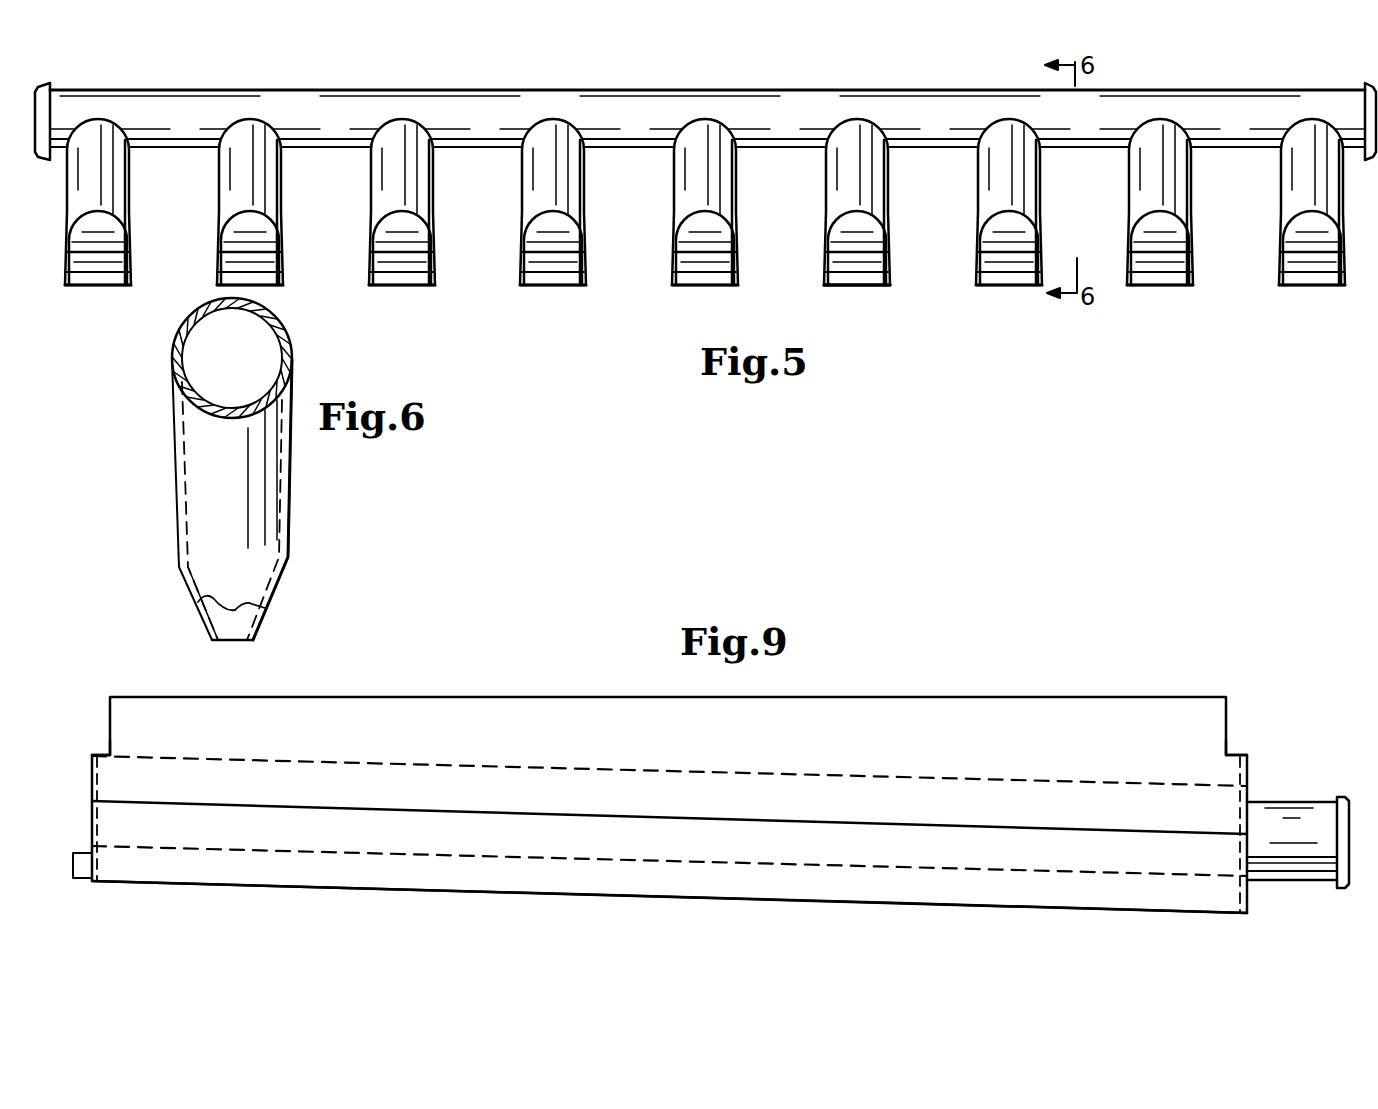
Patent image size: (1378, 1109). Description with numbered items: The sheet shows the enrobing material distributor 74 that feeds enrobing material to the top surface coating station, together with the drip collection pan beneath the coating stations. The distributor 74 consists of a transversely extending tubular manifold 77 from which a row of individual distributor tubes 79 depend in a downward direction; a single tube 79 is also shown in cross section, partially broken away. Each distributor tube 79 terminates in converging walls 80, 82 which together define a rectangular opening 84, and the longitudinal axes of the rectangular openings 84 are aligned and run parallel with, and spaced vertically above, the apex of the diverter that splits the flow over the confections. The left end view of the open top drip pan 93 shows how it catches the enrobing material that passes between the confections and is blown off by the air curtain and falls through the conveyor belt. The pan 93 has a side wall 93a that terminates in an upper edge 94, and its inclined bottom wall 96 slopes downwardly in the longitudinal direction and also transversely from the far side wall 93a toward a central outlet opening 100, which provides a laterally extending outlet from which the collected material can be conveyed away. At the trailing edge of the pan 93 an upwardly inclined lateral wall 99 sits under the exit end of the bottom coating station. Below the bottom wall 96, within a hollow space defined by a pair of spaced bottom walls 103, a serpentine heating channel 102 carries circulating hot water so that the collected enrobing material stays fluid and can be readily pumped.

In FIG. 5, the enrobing material distributor 74 is at (865, 88).
In FIG. 5, the tubular manifold 77 is at (934, 140).
In FIG. 6, the tubular manifold 77 is at (288, 337).
In FIG. 5, the distributor tubes 79 is at (831, 222).
In FIG. 6, the distributor tubes 79 is at (293, 484).
In FIG. 5, the converging wall 80 is at (886, 268).
In FIG. 6, the converging wall 80 is at (198, 610).
In FIG. 6, the converging wall 82 is at (263, 608).
In FIG. 5, the rectangular openings 84 is at (856, 288).
In FIG. 6, the rectangular openings 84 is at (235, 644).
In FIG. 9, the drip pan 93 is at (1250, 793).
In FIG. 9, the side wall 93a is at (89, 787).
In FIG. 9, the upper edge 94 is at (103, 755).
In FIG. 9, the inclined bottom wall 96 is at (665, 771).
In FIG. 9, the upwardly inclined lateral wall 99 is at (505, 738).
In FIG. 9, the central outlet opening 100 is at (1312, 813).
In FIG. 9, the heating channel 102 is at (977, 899).
In FIG. 9, the spaced bottom walls 103 is at (628, 896).